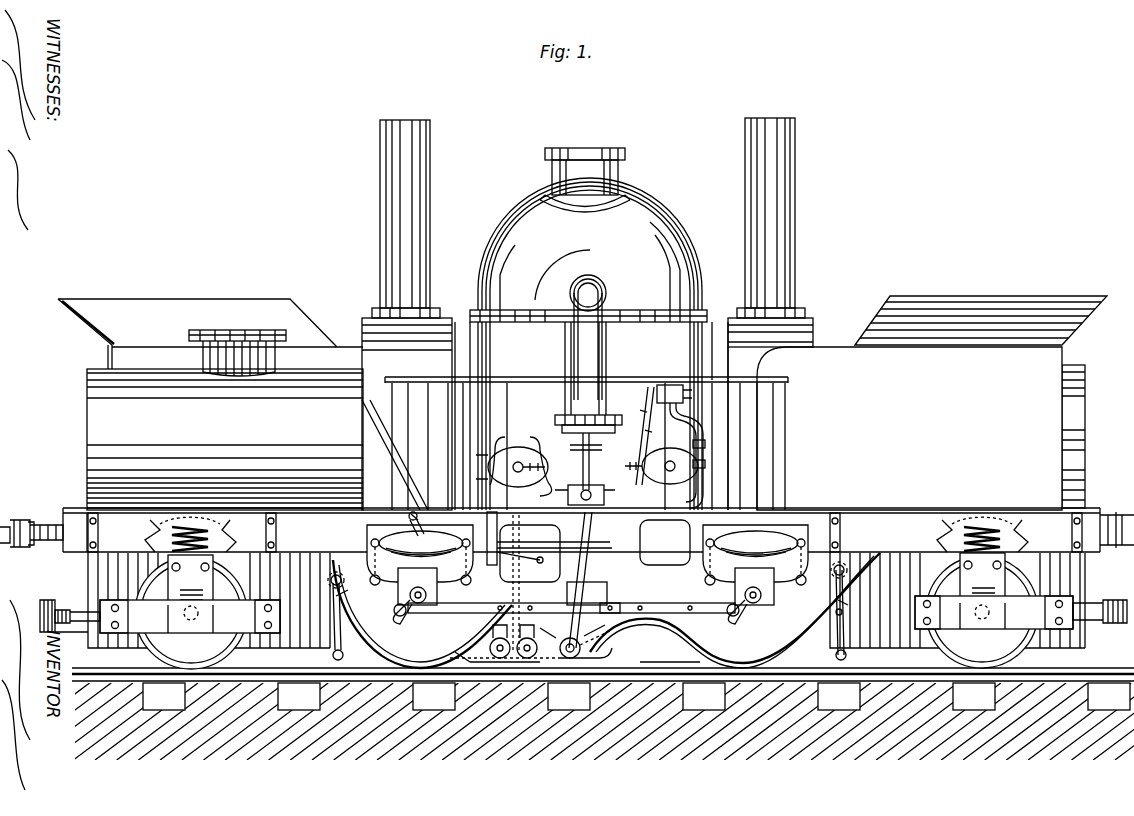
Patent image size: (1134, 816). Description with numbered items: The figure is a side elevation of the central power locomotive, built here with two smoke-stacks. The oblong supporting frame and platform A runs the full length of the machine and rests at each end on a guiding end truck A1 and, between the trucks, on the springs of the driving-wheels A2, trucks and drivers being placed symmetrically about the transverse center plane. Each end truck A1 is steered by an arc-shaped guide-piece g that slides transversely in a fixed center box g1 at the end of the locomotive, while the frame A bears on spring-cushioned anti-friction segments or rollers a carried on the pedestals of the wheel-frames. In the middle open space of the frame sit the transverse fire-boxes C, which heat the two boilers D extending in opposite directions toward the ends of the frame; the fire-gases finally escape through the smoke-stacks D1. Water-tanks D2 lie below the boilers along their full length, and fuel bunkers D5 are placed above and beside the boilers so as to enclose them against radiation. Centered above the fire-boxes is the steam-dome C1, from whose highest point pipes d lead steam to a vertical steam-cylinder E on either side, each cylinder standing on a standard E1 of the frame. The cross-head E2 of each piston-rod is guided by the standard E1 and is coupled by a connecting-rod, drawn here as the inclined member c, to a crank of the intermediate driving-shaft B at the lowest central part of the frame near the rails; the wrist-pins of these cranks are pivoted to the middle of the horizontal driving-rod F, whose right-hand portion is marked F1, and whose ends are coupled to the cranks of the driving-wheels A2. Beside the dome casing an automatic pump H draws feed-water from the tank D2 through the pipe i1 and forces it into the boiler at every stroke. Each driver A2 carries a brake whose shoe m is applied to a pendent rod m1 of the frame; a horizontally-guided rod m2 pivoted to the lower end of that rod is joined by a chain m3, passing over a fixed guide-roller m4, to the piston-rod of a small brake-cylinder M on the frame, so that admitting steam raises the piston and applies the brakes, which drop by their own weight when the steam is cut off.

The boiler D is at (210, 440).
The fuel bunker D5 is at (130, 339).
The smoke-stack D1 is at (432, 207).
The steam-dome C1 is at (588, 329).
The steam pipe d is at (588, 337).
The steam-cylinder E is at (608, 370).
The fire-box C is at (575, 416).
The standard E1 is at (587, 441).
The cross-head E2 is at (592, 495).
The pump H is at (690, 398).
The pipe i1 is at (706, 440).
The frame A is at (567, 545).
The spring-cushioned anti-friction segment or roller a is at (587, 530).
The water-tank D2 is at (586, 600).
The end truck A1 is at (586, 611).
The arc-shaped guide-piece g is at (1108, 600).
The fixed center box g1 is at (64, 604).
The driving-wheel A2 is at (606, 610).
The driving-rod F is at (493, 568).
The connecting rod F1 is at (704, 574).
The lever c is at (587, 580).
The intermediate driving-shaft B is at (612, 650).
The brake-cylinder M is at (549, 538).
The guide-roller m4 is at (522, 564).
The chain m3 is at (527, 582).
The horizontally-guided rod m2 is at (572, 653).
The brake shoe m is at (598, 611).
The pendent brake-rod m1 is at (588, 593).